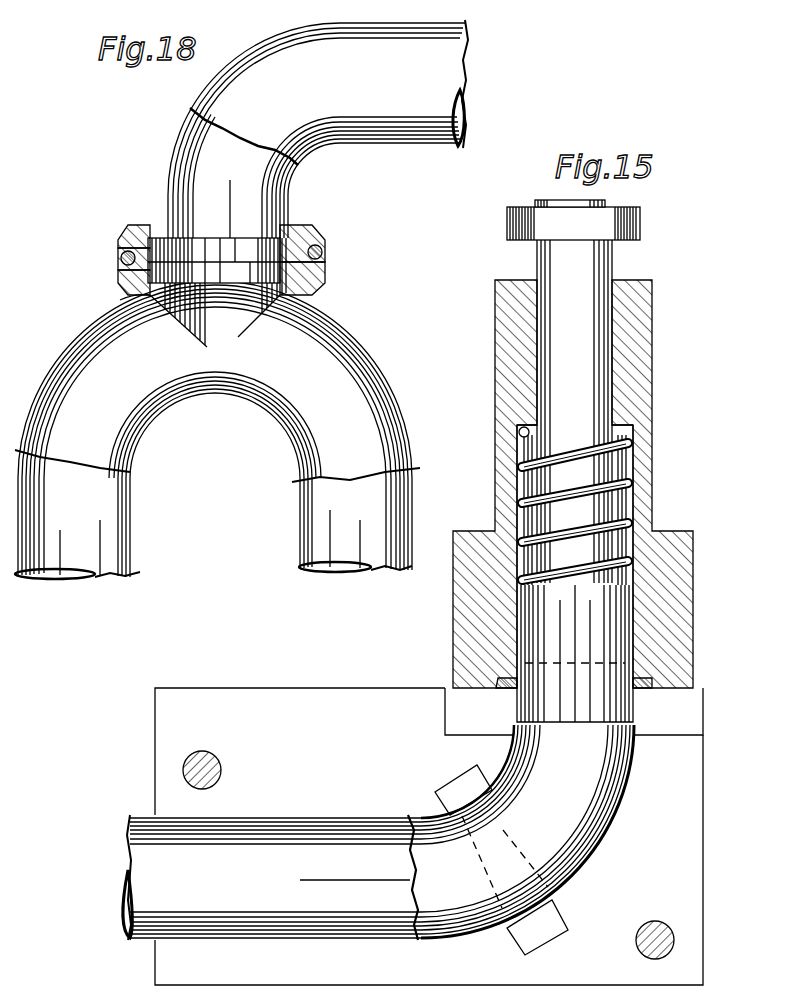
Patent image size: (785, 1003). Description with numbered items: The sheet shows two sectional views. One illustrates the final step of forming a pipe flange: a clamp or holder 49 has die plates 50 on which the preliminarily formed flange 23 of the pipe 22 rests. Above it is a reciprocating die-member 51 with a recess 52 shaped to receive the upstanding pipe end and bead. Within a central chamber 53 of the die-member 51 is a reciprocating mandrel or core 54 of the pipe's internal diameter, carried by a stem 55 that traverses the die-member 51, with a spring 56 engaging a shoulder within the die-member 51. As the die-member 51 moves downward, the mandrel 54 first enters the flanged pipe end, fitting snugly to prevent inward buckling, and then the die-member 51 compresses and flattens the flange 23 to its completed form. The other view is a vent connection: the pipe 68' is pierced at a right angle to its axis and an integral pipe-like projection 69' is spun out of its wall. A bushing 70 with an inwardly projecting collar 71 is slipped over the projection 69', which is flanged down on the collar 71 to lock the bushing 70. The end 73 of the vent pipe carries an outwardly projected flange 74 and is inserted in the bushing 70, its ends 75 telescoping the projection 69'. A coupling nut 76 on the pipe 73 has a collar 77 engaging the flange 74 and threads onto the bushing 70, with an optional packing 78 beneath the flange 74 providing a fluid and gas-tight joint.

In FIG. 15, the pipe 22 is at (605, 820).
In FIG. 15, the preliminarily formed flange 23 is at (512, 688).
In FIG. 15, the clamp or holder 49 is at (690, 792).
In FIG. 15, the die plates 50 is at (690, 722).
In FIG. 15, the reciprocating die-member 51 is at (685, 600).
In FIG. 15, the recess 52 is at (648, 684).
In FIG. 15, the central chamber 53 is at (620, 508).
In FIG. 15, the mandrel or core 54 is at (530, 637).
In FIG. 15, the stem 55 is at (598, 345).
In FIG. 15, the spring 56 is at (615, 447).
In FIG. 18, the pipe 68' is at (219, 430).
In FIG. 18, the pipe-like projection 69' is at (329, 284).
In FIG. 18, the bushing 70 is at (128, 283).
In FIG. 18, the collar 71 is at (140, 300).
In FIG. 18, the end of the vent pipe 73 is at (282, 218).
In FIG. 18, the outwardly projected flange 74 is at (306, 249).
In FIG. 18, the ends 75 is at (240, 276).
In FIG. 18, the coupling nut 76 is at (318, 270).
In FIG. 18, the collar 77 is at (146, 237).
In FIG. 18, the packing 78 is at (126, 262).